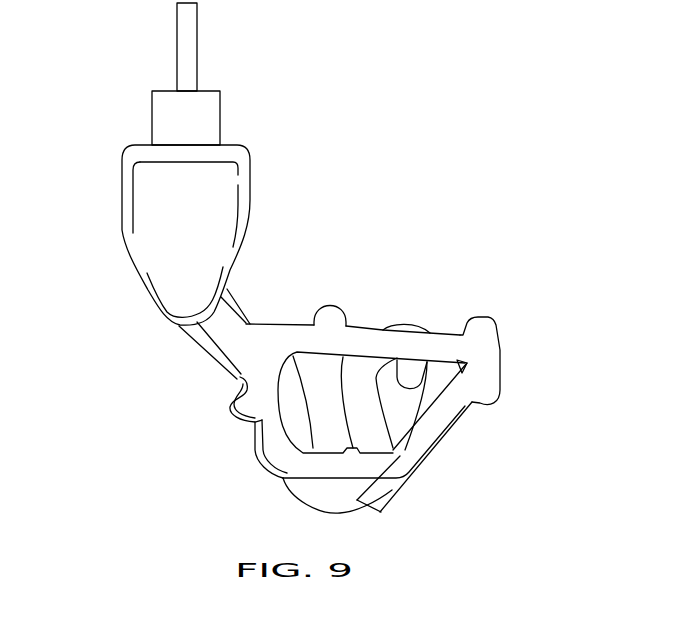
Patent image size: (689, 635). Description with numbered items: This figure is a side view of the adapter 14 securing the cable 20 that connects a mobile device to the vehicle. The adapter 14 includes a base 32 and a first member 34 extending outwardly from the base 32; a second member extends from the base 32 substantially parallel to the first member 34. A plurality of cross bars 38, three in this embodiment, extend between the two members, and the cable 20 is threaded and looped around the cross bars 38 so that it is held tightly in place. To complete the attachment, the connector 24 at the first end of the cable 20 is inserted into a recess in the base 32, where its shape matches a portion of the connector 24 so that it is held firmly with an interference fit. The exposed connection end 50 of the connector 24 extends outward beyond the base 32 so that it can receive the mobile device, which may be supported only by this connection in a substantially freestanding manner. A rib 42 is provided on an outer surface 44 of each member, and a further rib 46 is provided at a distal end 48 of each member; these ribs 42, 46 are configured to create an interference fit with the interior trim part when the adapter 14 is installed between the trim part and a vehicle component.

The adapter 14 is at (140, 375).
The cable 20 is at (320, 495).
The connector 24 is at (167, 117).
The base 32 is at (167, 242).
The first member 34 is at (433, 450).
The cross bars 38 is at (413, 368).
The rib 42 is at (333, 318).
The outer surface 44 is at (290, 322).
The rib 46 is at (477, 330).
The distal end 48 is at (516, 362).
The exposed connection end 50 is at (183, 50).